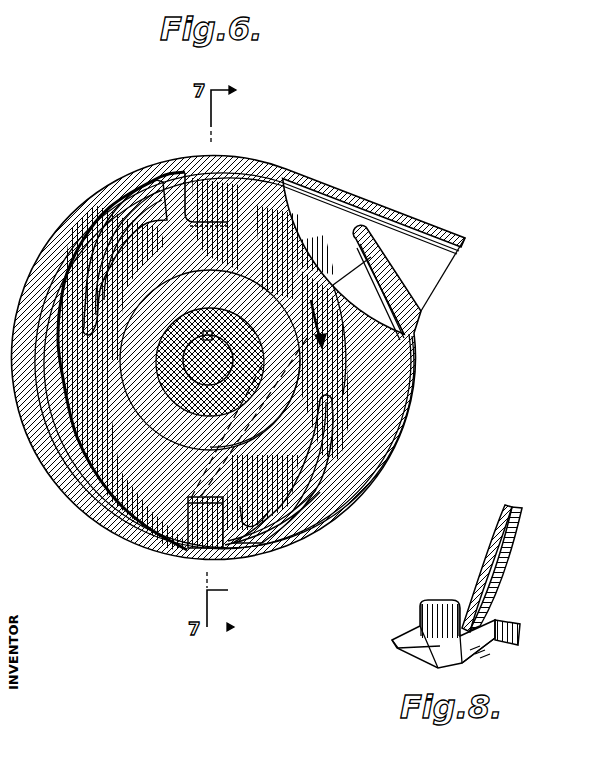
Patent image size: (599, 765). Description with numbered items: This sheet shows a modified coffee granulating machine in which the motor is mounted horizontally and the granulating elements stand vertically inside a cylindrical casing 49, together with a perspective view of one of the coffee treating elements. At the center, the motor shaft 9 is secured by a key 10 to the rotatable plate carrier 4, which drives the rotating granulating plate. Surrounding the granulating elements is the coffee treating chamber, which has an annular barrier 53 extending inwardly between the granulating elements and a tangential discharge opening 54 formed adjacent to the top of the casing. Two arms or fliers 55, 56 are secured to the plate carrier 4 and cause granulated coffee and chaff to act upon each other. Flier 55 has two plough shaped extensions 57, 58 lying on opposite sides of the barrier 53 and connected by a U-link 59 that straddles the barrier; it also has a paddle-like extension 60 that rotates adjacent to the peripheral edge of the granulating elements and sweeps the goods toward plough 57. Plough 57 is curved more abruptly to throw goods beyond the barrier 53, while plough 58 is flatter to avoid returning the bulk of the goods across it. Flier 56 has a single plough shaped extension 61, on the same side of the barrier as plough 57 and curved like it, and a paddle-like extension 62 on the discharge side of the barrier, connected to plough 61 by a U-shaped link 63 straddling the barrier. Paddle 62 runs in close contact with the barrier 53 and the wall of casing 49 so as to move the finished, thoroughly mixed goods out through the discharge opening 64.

In FIG. 6, the plate carrier 4 is at (200, 398).
In FIG. 6, the shaft 9 is at (223, 340).
In FIG. 6, the key 10 is at (203, 333).
In FIG. 6, the cylindrical casing 49 is at (63, 222).
In FIG. 6, the annular barrier 53 is at (352, 326).
In FIG. 6, the tangential discharge opening 54 is at (370, 229).
In FIG. 6, the flier 55 is at (317, 493).
In FIG. 8, the flier 55 is at (462, 592).
In FIG. 6, the flier 56 is at (118, 212).
In FIG. 6, the plough shaped extension 57 is at (323, 467).
In FIG. 8, the plough shaped extension 57 is at (522, 590).
In FIG. 8, the plough shaped extension 58 is at (492, 562).
In FIG. 6, the U-link 59 is at (195, 547).
In FIG. 8, the U-link 59 is at (438, 617).
In FIG. 6, the paddle-like extension 60 is at (248, 521).
In FIG. 8, the paddle-like extension 60 is at (521, 623).
In FIG. 6, the plough shaped extension 61 is at (100, 248).
In FIG. 6, the paddle-like extension 62 is at (187, 196).
In FIG. 6, the U-shaped link 63 is at (208, 227).
In FIG. 6, the discharge opening 64 is at (435, 263).